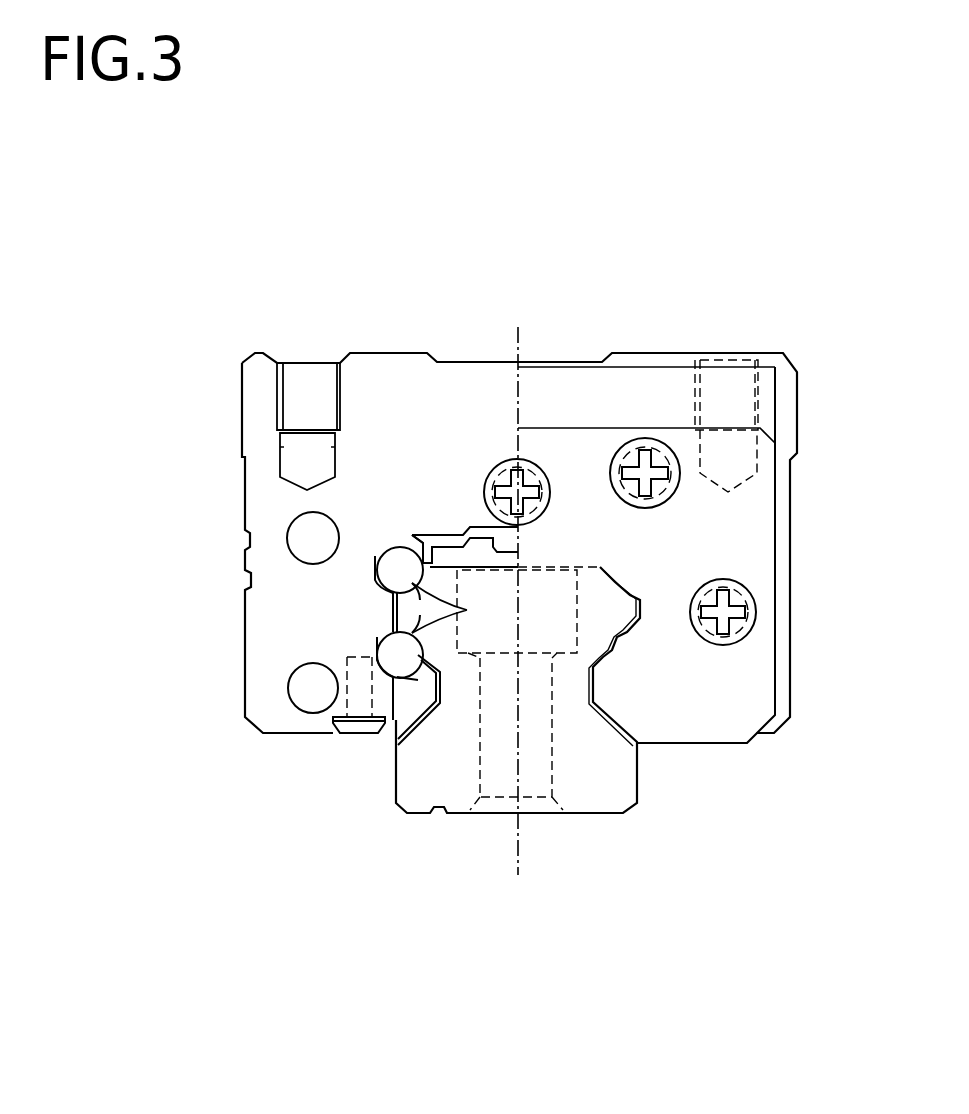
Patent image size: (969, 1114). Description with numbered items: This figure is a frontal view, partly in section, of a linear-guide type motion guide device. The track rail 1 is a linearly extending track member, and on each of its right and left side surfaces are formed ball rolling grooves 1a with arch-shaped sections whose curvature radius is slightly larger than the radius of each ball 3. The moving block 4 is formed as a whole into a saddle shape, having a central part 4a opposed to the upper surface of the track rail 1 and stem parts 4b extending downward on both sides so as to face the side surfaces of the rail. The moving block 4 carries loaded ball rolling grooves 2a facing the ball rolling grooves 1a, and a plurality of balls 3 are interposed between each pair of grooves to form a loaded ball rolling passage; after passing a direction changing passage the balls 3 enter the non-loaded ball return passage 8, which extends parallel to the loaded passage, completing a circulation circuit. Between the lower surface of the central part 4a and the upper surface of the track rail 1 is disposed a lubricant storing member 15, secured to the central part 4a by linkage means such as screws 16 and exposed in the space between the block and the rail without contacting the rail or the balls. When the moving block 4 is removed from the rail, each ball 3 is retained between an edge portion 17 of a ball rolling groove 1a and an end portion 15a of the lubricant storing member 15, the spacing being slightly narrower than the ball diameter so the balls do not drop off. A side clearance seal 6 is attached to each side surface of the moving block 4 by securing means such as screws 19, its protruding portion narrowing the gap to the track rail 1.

The track rail 1 is at (597, 793).
The ball rolling groove 1a is at (461, 608).
The loaded ball rolling groove 2a is at (393, 557).
The ball 3 is at (377, 632).
The moving block 4 is at (574, 340).
The central part 4a is at (477, 357).
The stem part 4b is at (277, 607).
The side clearance seal 6 is at (413, 760).
The non-loaded ball return passage 8 is at (293, 697).
The lubricant storing member 15 is at (487, 543).
The end portion of lubricant storing member 15a is at (423, 543).
The screw 16 is at (488, 543).
The edge portion of ball rolling groove 17 is at (390, 603).
The screw 19 is at (343, 735).